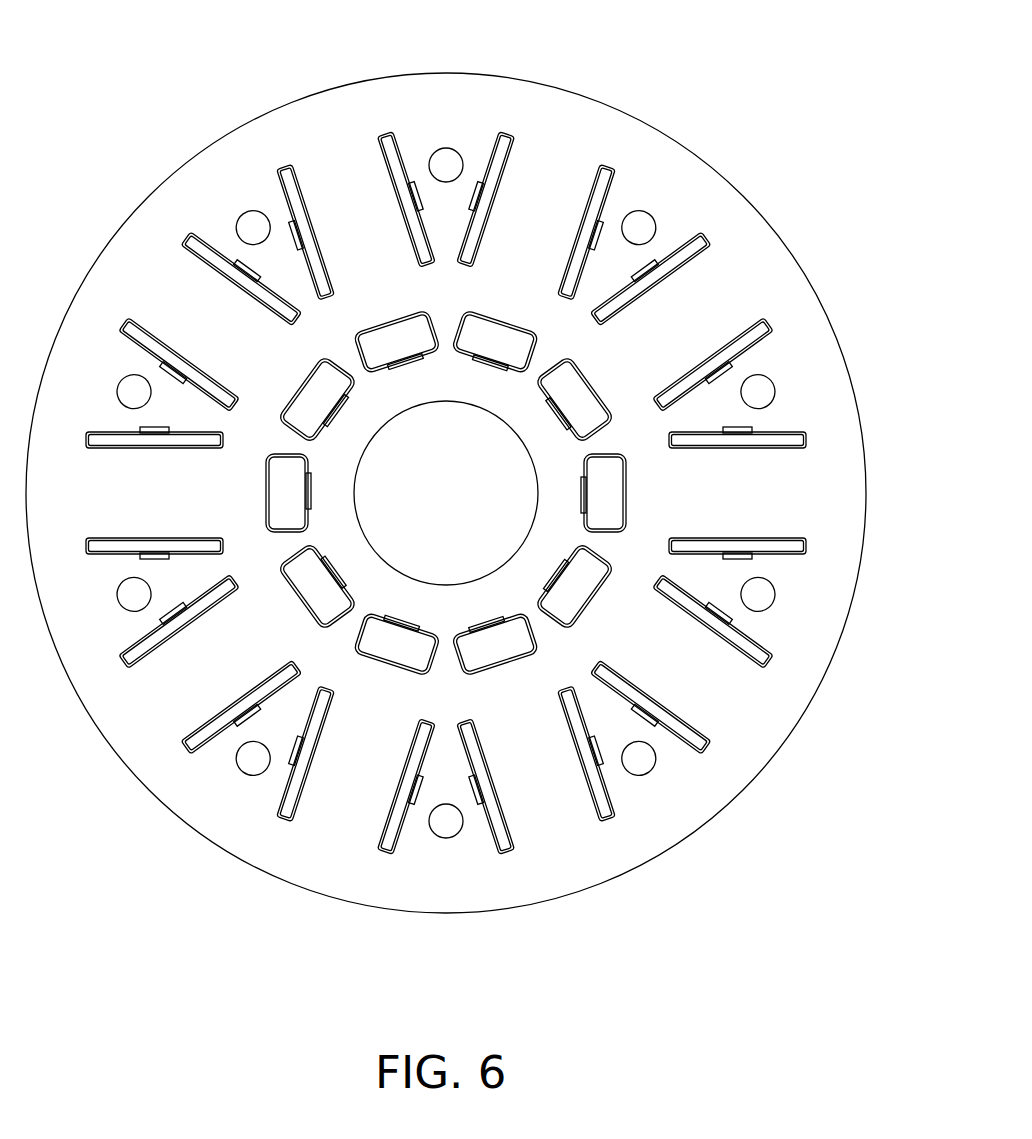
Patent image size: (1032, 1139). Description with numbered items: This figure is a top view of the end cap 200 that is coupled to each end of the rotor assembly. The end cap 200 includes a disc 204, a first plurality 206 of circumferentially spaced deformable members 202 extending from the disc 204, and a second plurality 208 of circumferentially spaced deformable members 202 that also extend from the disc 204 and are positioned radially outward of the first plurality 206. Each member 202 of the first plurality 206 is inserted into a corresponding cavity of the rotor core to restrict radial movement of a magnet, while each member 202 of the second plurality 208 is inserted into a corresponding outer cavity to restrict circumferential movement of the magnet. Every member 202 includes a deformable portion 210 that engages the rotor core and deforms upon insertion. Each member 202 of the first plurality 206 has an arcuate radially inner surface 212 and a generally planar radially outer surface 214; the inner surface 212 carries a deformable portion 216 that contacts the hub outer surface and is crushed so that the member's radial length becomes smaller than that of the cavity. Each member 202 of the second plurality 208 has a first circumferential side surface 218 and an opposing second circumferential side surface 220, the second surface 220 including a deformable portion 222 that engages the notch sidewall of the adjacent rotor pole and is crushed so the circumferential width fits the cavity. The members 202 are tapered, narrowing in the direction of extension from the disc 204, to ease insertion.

The end cap 200 is at (476, 495).
The deformable members 202 is at (533, 325).
The disc 204 is at (312, 878).
The first plurality of deformable members 206 is at (602, 390).
The second plurality of deformable members 208 is at (724, 658).
The deformable portion 210 is at (553, 583).
The arcuate radially inner surface 212 is at (753, 481).
The generally planar radially outer surface 214 is at (753, 481).
The deformable portion 216 is at (588, 492).
The first circumferential side surface 218 is at (520, 846).
The second circumferential side surface 220 is at (467, 846).
The deformable portion 222 is at (461, 846).